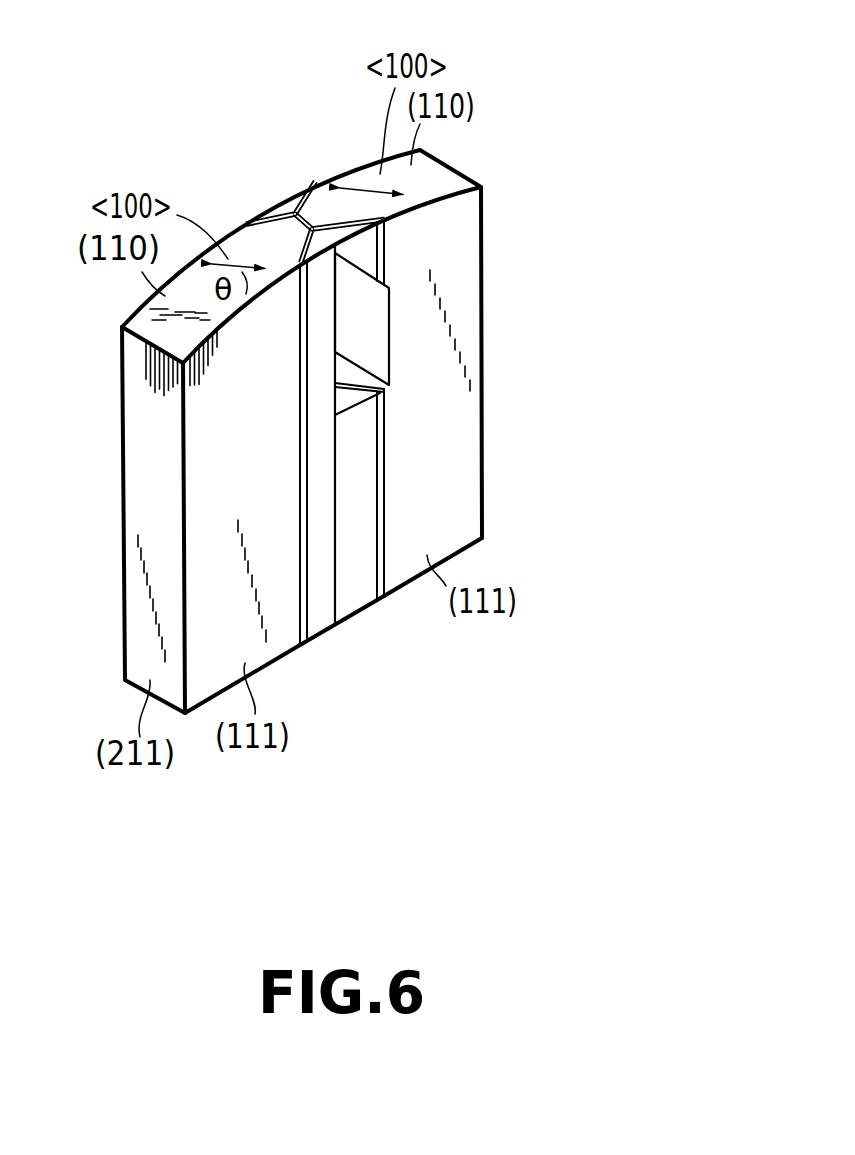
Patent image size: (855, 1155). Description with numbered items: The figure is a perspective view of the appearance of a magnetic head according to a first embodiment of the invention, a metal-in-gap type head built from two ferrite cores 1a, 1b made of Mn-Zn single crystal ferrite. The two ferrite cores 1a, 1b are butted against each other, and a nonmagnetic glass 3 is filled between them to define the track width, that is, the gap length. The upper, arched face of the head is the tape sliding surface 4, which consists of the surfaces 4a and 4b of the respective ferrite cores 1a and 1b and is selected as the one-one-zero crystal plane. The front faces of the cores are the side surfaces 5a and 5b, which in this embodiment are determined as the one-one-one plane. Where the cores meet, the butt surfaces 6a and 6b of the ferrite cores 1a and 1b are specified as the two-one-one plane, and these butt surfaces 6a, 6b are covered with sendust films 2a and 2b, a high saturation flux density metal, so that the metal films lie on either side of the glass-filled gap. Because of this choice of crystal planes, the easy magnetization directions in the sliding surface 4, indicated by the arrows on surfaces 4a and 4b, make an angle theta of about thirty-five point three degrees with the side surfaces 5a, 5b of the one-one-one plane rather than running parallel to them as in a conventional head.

The ferrite core 1a is at (158, 455).
The ferrite core 1b is at (470, 258).
The sendust film 2a is at (298, 385).
The sendust film 2b is at (385, 430).
The nonmagnetic glass 3 is at (360, 600).
The tape sliding surface 4 is at (322, 22).
The sliding surface 4a is at (243, 240).
The sliding surface 4b is at (363, 173).
The side surface 5a is at (203, 525).
The side surface 5b is at (465, 445).
The butt surface 6a is at (297, 222).
The butt surface 6b is at (313, 226).